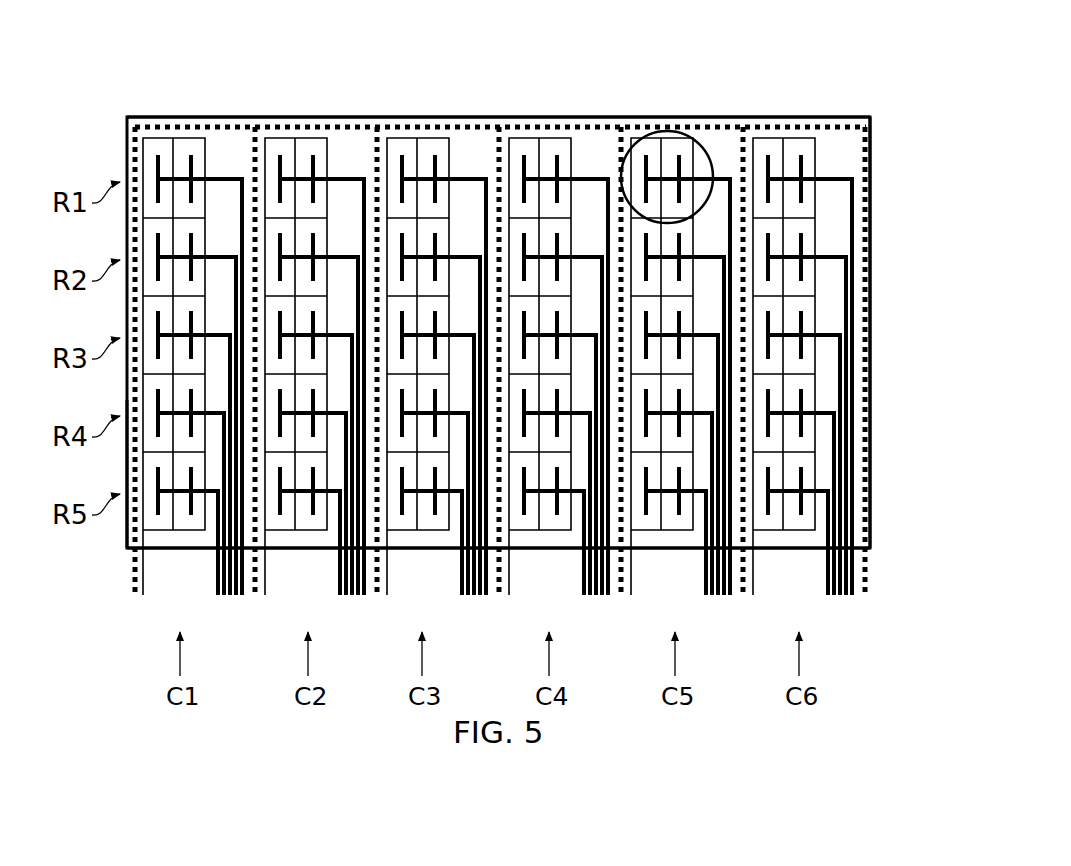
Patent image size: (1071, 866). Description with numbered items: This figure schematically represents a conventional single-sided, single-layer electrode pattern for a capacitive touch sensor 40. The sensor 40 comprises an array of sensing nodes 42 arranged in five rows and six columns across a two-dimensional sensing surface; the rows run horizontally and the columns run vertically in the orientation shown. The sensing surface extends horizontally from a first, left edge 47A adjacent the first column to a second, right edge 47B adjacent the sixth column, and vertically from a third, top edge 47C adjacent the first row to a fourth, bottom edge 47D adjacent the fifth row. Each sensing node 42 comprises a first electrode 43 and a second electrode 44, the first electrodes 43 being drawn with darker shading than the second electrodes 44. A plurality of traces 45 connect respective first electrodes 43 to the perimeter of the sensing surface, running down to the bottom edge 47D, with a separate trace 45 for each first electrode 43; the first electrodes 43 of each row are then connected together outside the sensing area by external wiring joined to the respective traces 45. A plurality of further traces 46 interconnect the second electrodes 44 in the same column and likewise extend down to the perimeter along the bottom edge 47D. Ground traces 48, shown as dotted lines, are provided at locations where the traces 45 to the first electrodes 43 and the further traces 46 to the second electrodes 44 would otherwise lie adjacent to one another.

The capacitive touch sensor 40 is at (338, 97).
The sensing node 42 is at (683, 133).
The first electrode 43 is at (695, 170).
The second electrode 44 is at (629, 150).
The trace 45 is at (718, 328).
The further trace 46 is at (143, 570).
The first edge 47A is at (128, 548).
The second edge 47B is at (870, 466).
The third edge 47C is at (425, 93).
The fourth edge 47D is at (438, 550).
The ground trace 48 is at (123, 140).